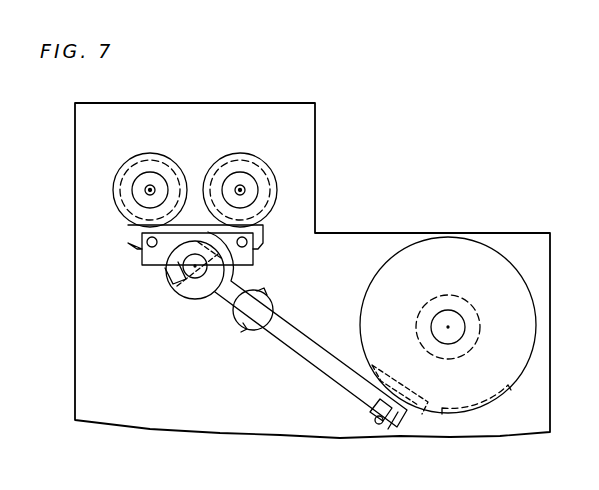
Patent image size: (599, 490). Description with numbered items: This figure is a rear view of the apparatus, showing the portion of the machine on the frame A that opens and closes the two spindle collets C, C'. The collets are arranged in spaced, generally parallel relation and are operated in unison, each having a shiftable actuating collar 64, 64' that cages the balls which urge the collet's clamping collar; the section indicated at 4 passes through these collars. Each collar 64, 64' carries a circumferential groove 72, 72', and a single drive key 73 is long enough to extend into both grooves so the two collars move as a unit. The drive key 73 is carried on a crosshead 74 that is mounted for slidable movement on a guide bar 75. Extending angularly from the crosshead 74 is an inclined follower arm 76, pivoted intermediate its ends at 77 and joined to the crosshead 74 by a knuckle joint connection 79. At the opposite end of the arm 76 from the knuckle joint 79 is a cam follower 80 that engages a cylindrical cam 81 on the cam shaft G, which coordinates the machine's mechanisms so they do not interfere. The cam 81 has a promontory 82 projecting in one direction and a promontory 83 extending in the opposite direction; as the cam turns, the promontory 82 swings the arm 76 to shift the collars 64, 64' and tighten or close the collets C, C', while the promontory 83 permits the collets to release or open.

The frame A is at (72, 269).
The section line 4- 4 is at (82, 190).
The shiftable collar 64 is at (240, 171).
The shiftable collar 64' is at (136, 183).
The circumferential groove 72 is at (258, 182).
The circumferential groove 72' is at (131, 193).
The spindle collet C is at (262, 153).
The spindle collet C' is at (156, 146).
The drive key 73 is at (128, 244).
The crosshead 74 is at (157, 258).
The guide bar 75 is at (195, 270).
The inclined follower arm 76 is at (300, 343).
The pivot 77 is at (242, 328).
The knuckle joint connection 79 is at (170, 293).
The cam follower 80 is at (412, 418).
The cylindrical cam 81 is at (437, 245).
The promontory 82 is at (386, 362).
The promontory 83 is at (478, 410).
The cam shaft G is at (462, 315).